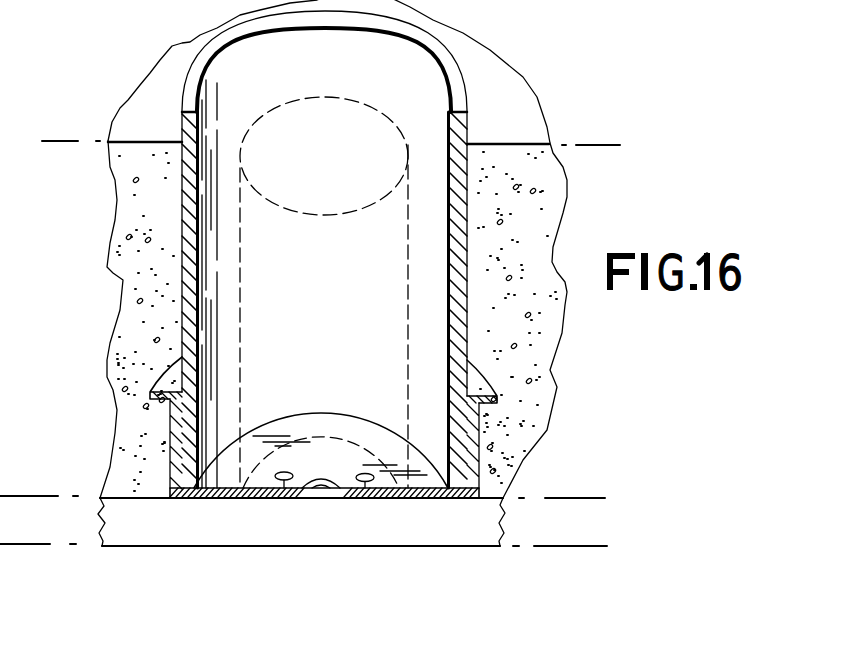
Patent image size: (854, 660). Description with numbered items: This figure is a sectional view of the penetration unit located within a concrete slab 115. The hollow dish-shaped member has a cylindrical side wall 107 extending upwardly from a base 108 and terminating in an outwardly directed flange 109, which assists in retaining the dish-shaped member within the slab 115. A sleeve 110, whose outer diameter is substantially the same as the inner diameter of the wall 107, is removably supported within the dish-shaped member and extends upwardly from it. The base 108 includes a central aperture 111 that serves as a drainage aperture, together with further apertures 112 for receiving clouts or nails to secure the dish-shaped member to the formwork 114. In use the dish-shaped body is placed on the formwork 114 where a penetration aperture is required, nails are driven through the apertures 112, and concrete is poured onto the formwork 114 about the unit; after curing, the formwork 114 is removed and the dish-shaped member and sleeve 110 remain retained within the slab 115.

The cylindrical side wall 107 is at (127, 418).
The base 108 is at (392, 489).
The outwardly directed flange 109 is at (147, 393).
The sleeve 110 is at (455, 64).
The central aperture 111 is at (307, 498).
The apertures 112 is at (287, 498).
The formwork 114 is at (473, 540).
The slab 115 is at (552, 180).